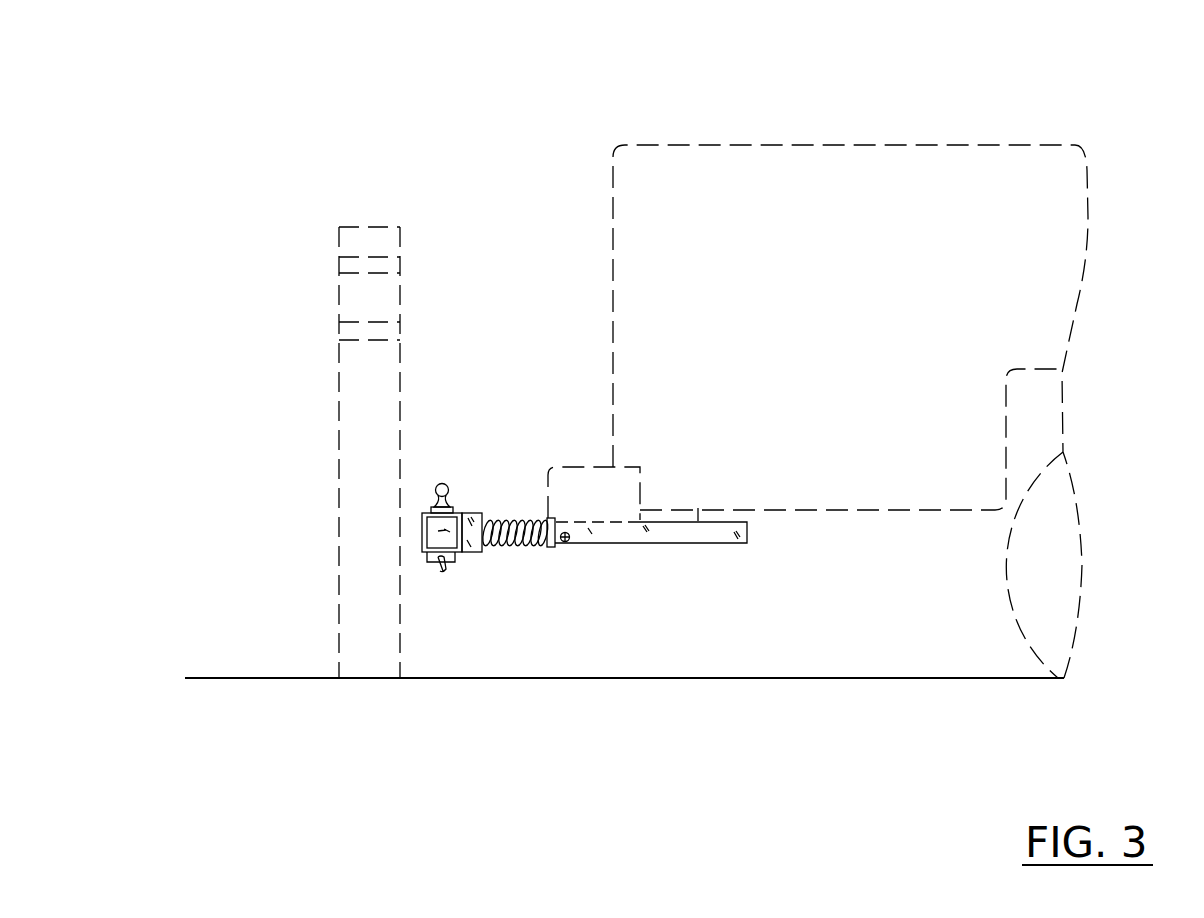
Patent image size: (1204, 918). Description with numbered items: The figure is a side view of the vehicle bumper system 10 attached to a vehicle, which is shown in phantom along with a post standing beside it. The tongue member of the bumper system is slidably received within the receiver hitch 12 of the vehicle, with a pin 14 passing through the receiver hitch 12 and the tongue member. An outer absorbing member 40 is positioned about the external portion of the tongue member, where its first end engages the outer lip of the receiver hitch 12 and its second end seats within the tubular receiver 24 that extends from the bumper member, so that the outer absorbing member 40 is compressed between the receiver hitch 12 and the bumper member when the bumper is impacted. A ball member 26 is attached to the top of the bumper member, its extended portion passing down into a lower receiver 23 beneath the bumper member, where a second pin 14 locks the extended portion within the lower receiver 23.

The vehicle bumper system 10 is at (500, 160).
The receiver hitch 12 is at (696, 542).
The pin 14 is at (567, 545).
The lower receiver 23 is at (435, 563).
The tubular receiver 24 is at (482, 548).
The ball member 26 is at (443, 483).
The outer absorbing member 40 is at (510, 518).